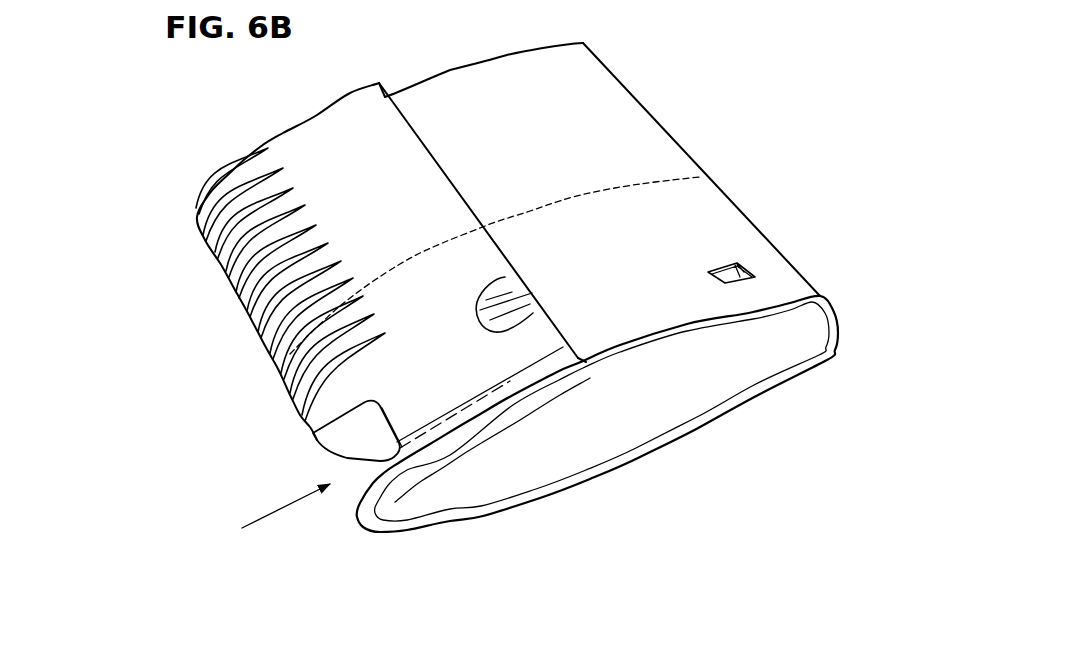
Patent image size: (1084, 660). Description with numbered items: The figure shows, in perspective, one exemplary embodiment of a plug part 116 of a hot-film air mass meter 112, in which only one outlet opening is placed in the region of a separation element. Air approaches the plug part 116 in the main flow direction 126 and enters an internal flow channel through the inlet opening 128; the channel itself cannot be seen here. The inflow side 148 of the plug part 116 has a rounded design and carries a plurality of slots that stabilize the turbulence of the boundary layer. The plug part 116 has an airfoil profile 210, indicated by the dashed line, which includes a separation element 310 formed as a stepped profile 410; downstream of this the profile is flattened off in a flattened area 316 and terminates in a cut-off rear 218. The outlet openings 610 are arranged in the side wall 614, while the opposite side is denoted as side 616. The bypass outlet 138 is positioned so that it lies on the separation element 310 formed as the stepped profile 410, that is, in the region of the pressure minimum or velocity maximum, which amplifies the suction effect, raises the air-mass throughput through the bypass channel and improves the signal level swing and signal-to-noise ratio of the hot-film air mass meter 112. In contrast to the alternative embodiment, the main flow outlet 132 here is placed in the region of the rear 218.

The hot-film air mass meter 112 is at (218, 261).
The plug part 116 is at (218, 261).
The inflow side 148 is at (258, 376).
The inlet opening 128 is at (364, 472).
The main flow direction 126 is at (280, 510).
The opposite side 616 is at (723, 428).
The airfoil profile 210 is at (581, 188).
The separation element 310 is at (478, 217).
The stepped profile 410 is at (474, 194).
The flattened area 316 is at (632, 160).
The rear 218 is at (766, 222).
The side wall 614 is at (721, 230).
The outlet openings 610 is at (703, 285).
The bypass outlet 138 is at (505, 277).
The main flow outlet 132 is at (750, 268).